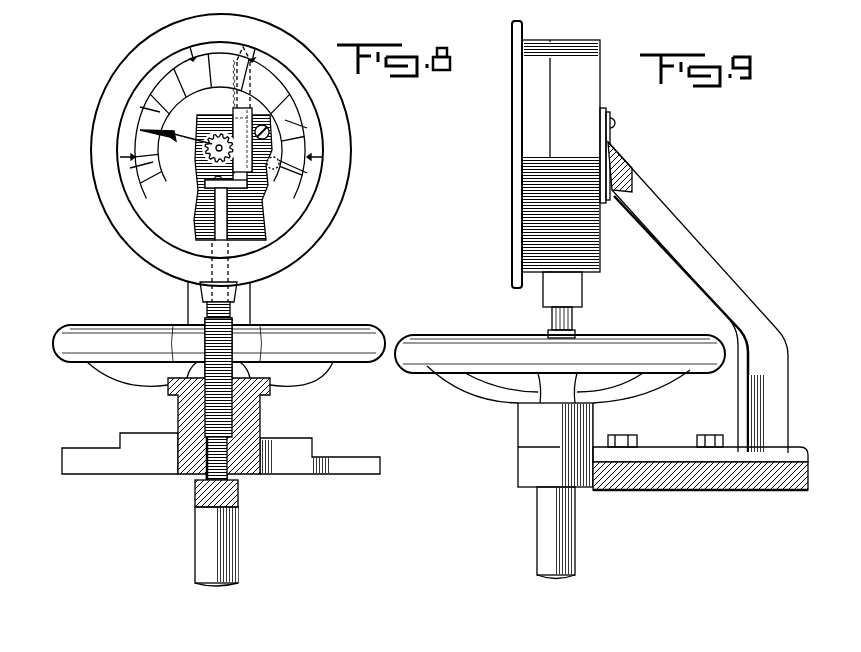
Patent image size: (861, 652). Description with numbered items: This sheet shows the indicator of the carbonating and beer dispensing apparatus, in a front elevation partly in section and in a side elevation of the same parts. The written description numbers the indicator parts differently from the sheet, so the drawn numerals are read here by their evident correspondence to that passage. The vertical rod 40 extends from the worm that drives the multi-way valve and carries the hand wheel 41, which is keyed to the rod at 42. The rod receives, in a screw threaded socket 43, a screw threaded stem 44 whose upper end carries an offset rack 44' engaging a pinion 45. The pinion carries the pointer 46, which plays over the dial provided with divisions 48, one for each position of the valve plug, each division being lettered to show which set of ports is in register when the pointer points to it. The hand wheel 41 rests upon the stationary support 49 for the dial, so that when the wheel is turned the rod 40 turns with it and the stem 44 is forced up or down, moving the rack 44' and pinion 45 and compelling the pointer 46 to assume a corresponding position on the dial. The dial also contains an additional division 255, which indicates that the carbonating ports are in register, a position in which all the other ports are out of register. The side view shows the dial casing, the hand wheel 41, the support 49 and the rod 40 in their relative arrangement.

In FIG. 8, the cleaning pipe 40 is at (238, 523).
In FIG. 8, the hand wheel 41 is at (315, 342).
In FIG. 8, the hub 42 is at (260, 413).
In FIG. 8, the collar 43 is at (195, 490).
In FIG. 8, the stem 44 is at (166, 299).
In FIG. 9, the stem 44 is at (582, 305).
In FIG. 8, the bezel ring 44' is at (336, 101).
In FIG. 8, the rack casing 45 is at (210, 162).
In FIG. 8, the pointer gear 46 is at (180, 136).
In FIG. 8, the dial scale 48 is at (144, 97).
In FIG. 8, the plate 49 is at (138, 446).
In FIG. 9, the plate 49 is at (667, 447).
In FIG. 8, the additional division 255 is at (143, 162).